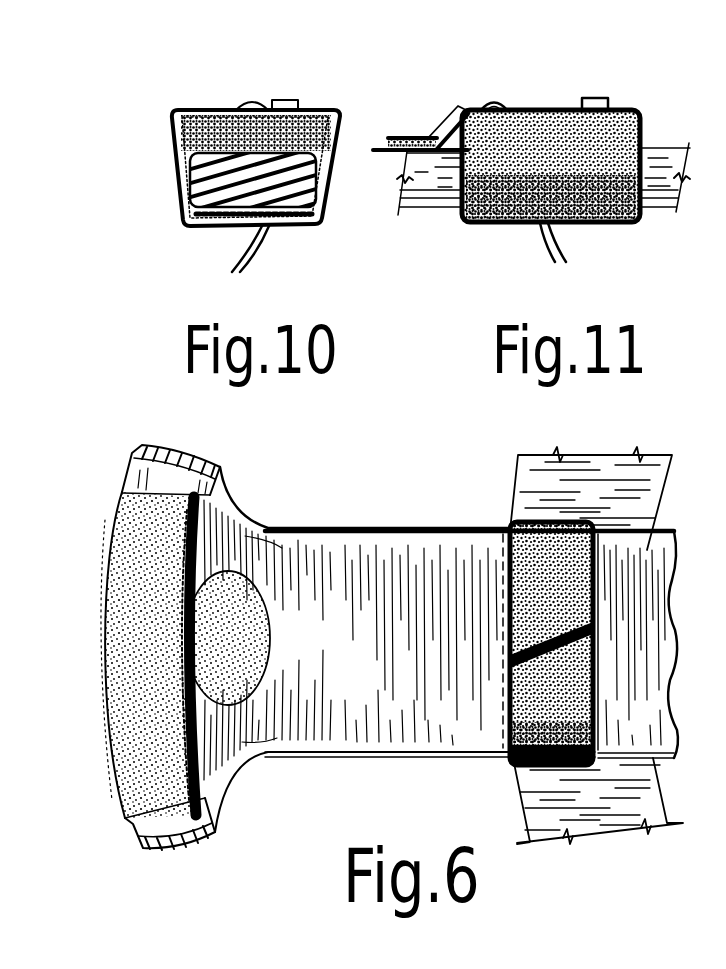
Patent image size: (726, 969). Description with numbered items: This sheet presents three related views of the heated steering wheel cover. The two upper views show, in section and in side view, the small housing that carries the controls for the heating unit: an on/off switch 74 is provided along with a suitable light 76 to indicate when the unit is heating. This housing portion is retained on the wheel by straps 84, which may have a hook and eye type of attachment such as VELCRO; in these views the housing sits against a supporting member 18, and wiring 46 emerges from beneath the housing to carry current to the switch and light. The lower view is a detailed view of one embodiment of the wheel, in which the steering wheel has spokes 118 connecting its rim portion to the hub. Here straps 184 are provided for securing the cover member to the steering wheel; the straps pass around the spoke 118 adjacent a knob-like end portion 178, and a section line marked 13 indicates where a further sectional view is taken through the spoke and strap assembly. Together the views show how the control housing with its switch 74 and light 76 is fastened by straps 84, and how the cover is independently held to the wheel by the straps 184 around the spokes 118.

In FIG. 10, the rail 18 is at (178, 200).
In FIG. 11, the rail 18 is at (450, 212).
In FIG. 10, the straps 84 is at (220, 222).
In FIG. 10, the wires 46 is at (244, 268).
In FIG. 11, the wires 46 is at (540, 232).
In FIG. 10, the light 76 is at (265, 104).
In FIG. 11, the light 76 is at (512, 102).
In FIG. 10, the on/off switch 74 is at (300, 104).
In FIG. 11, the on/off switch 74 is at (612, 100).
In FIG. 6, the knob 178 is at (240, 575).
In FIG. 6, the spokes 118 is at (340, 545).
In FIG. 6, the straps 184 is at (530, 522).
In FIG. 6, the section line 13- 13 is at (72, 540).